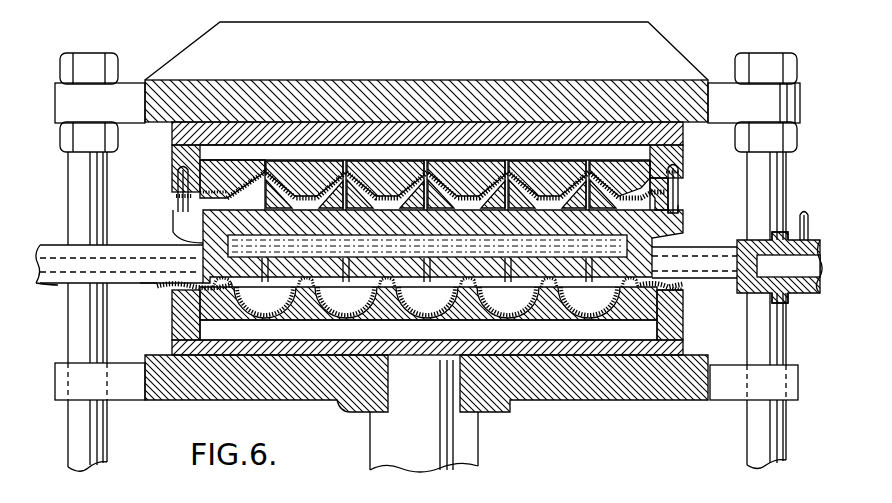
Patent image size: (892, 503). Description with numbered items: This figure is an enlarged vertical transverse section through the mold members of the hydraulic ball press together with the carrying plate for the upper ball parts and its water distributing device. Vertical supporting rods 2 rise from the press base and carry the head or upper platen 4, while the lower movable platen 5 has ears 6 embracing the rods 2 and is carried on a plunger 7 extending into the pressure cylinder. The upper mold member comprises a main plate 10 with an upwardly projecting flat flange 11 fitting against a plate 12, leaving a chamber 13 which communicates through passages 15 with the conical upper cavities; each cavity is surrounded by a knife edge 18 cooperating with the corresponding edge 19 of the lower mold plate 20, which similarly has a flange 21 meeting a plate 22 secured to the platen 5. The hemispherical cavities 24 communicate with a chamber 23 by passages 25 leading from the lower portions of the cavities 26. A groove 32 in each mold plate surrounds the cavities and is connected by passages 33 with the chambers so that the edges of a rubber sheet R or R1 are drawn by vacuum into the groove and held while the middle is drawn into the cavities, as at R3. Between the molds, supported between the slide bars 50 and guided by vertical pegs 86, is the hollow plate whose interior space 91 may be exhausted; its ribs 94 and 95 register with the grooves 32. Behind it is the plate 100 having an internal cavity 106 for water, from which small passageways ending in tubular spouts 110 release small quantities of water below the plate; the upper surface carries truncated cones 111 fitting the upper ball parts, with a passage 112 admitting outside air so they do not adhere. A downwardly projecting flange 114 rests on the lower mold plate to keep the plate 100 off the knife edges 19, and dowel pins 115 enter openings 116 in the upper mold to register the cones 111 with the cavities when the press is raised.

The vertical supporting rods 2 is at (100, 433).
The upper platen 4 is at (508, 88).
The lower movable platen 5 is at (640, 396).
The ears 6 is at (737, 394).
The plunger 7 is at (424, 416).
The main plate 10 is at (178, 176).
The flange 11 is at (178, 150).
The plate 12 is at (178, 128).
The chamber 13 is at (588, 178).
The passages 15 is at (344, 163).
The knife edge 18 is at (260, 183).
The knife edge 19 is at (393, 282).
The lower mold plate 20 is at (683, 308).
The flange 21 is at (686, 333).
The plate 22 is at (683, 349).
The chamber 23 is at (428, 330).
The cavities 24 is at (508, 301).
The passages 25 is at (348, 310).
The cavities 26 is at (497, 318).
The groove 32 is at (594, 176).
The passages 33 is at (206, 186).
The slide bars 50 is at (58, 286).
The vertical pegs 86 is at (805, 212).
The hollow interior space 91 is at (779, 267).
The rib 94 is at (773, 234).
The rib 95 is at (790, 300).
The plate 100 is at (652, 257).
The internal cavity 106 is at (207, 252).
The tubular spouts 110 is at (262, 280).
The cones 111 is at (466, 156).
The passage 112 is at (284, 180).
The flange 114 is at (589, 287).
The dowel pins 115 is at (683, 196).
The openings 116 is at (683, 172).
The rubber sheet R is at (148, 284).
The rubber sheet R1 is at (176, 198).
The rubber drawn into cavities R3 is at (347, 300).